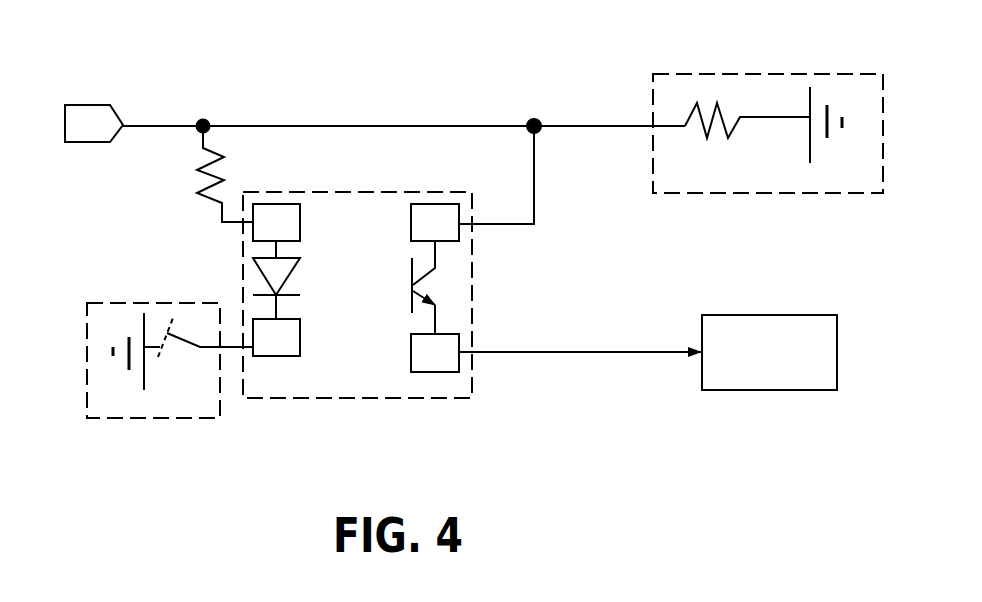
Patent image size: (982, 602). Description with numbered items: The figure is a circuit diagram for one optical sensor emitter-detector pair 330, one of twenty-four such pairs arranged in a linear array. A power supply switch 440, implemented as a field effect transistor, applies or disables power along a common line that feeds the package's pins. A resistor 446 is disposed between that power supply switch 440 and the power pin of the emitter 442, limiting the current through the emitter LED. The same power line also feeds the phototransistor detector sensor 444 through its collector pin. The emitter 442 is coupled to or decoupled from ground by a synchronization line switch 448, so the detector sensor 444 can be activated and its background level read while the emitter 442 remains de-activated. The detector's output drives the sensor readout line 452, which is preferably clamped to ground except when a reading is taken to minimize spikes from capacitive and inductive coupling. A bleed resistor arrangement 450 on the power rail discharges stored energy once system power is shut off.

The power supply switch 440 is at (85, 103).
The resistor 446 is at (203, 167).
The optical sensor emitter-detector pair 330 is at (422, 309).
The emitter 442 is at (318, 253).
The phototransistor detector sensor 444 is at (452, 283).
The synchronization line switch 448 is at (167, 420).
The bleed resistor arrangement 450 is at (752, 75).
The sensor readout line 452 is at (788, 313).